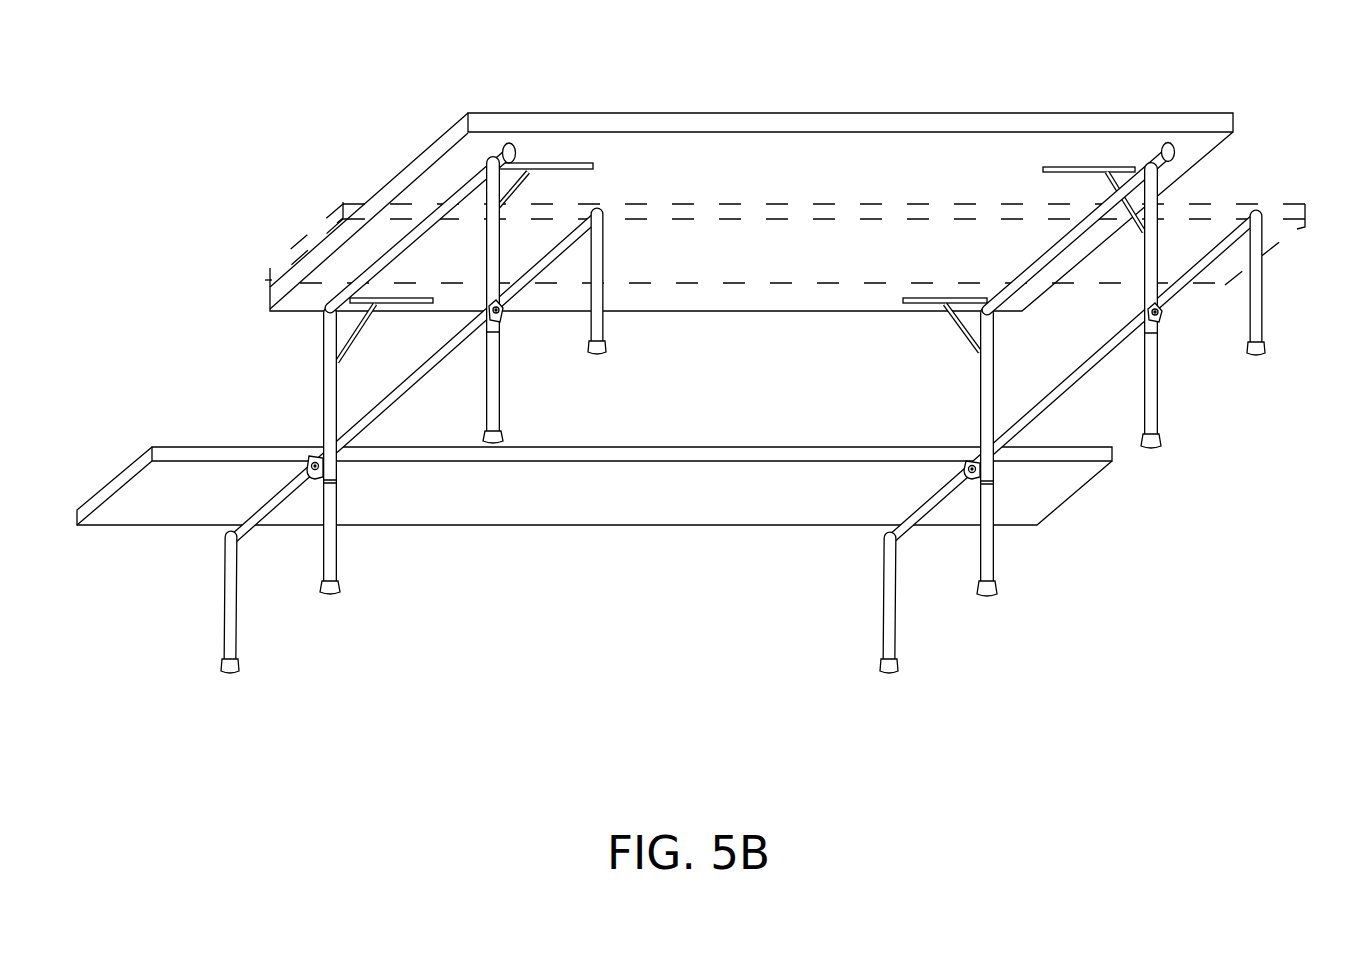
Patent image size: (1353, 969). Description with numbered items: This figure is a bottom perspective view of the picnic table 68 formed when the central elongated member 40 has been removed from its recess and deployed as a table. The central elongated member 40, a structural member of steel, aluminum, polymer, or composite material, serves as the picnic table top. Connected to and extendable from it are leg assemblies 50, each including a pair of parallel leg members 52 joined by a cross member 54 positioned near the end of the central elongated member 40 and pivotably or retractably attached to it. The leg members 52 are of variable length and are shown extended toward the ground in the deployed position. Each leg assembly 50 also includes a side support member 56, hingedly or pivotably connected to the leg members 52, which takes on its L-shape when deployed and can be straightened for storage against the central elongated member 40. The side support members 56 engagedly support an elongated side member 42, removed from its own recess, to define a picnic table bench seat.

The central elongated member 40 is at (747, 153).
The elongated side member 42 is at (268, 271).
The leg assembly 50 is at (1327, 240).
The leg member 52 is at (492, 358).
The cross member 54 is at (433, 352).
The side support member 56 is at (253, 535).
The picnic table 68 is at (99, 351).